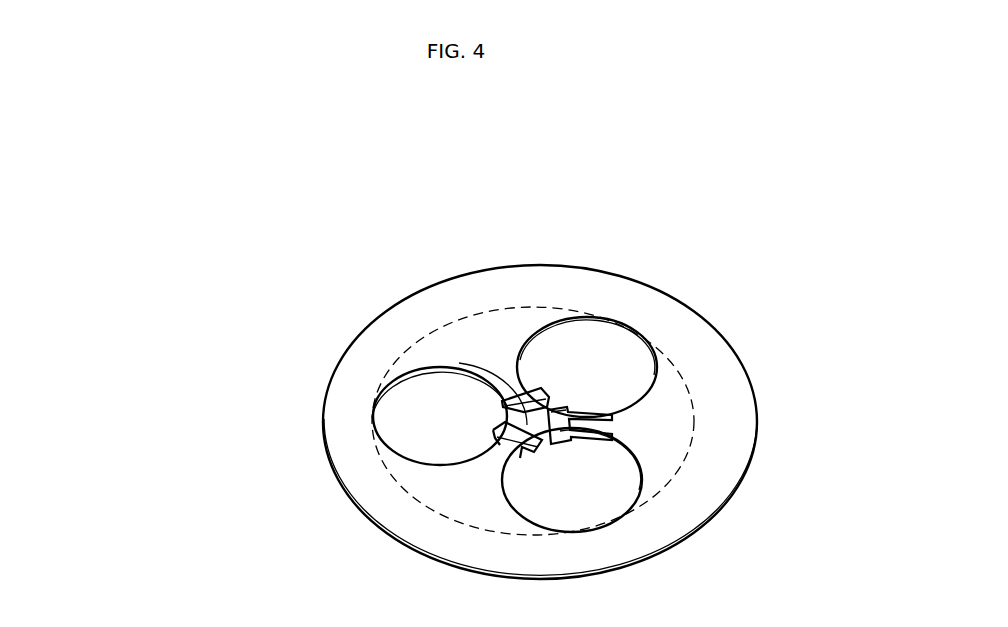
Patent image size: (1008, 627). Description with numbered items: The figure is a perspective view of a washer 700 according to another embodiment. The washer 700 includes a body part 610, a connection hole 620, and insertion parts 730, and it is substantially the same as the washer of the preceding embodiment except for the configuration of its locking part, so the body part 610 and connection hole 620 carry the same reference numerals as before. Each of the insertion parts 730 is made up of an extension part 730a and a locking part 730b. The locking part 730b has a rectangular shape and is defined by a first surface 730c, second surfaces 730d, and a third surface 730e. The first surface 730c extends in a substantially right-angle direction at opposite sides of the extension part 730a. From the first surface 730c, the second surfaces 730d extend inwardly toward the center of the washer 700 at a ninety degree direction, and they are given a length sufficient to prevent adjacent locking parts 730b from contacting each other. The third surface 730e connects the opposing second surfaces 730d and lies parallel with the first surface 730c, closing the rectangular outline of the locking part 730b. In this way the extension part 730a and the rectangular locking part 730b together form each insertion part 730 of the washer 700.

The washer 700 is at (324, 286).
The body part 610 is at (700, 502).
The connection hole 620 is at (694, 442).
The insertion parts 730 is at (129, 411).
The extension part 730a is at (500, 457).
The locking part 730b is at (221, 363).
The first surface 730c is at (398, 455).
The second surfaces 730d is at (498, 426).
The third surface 730e is at (500, 360).